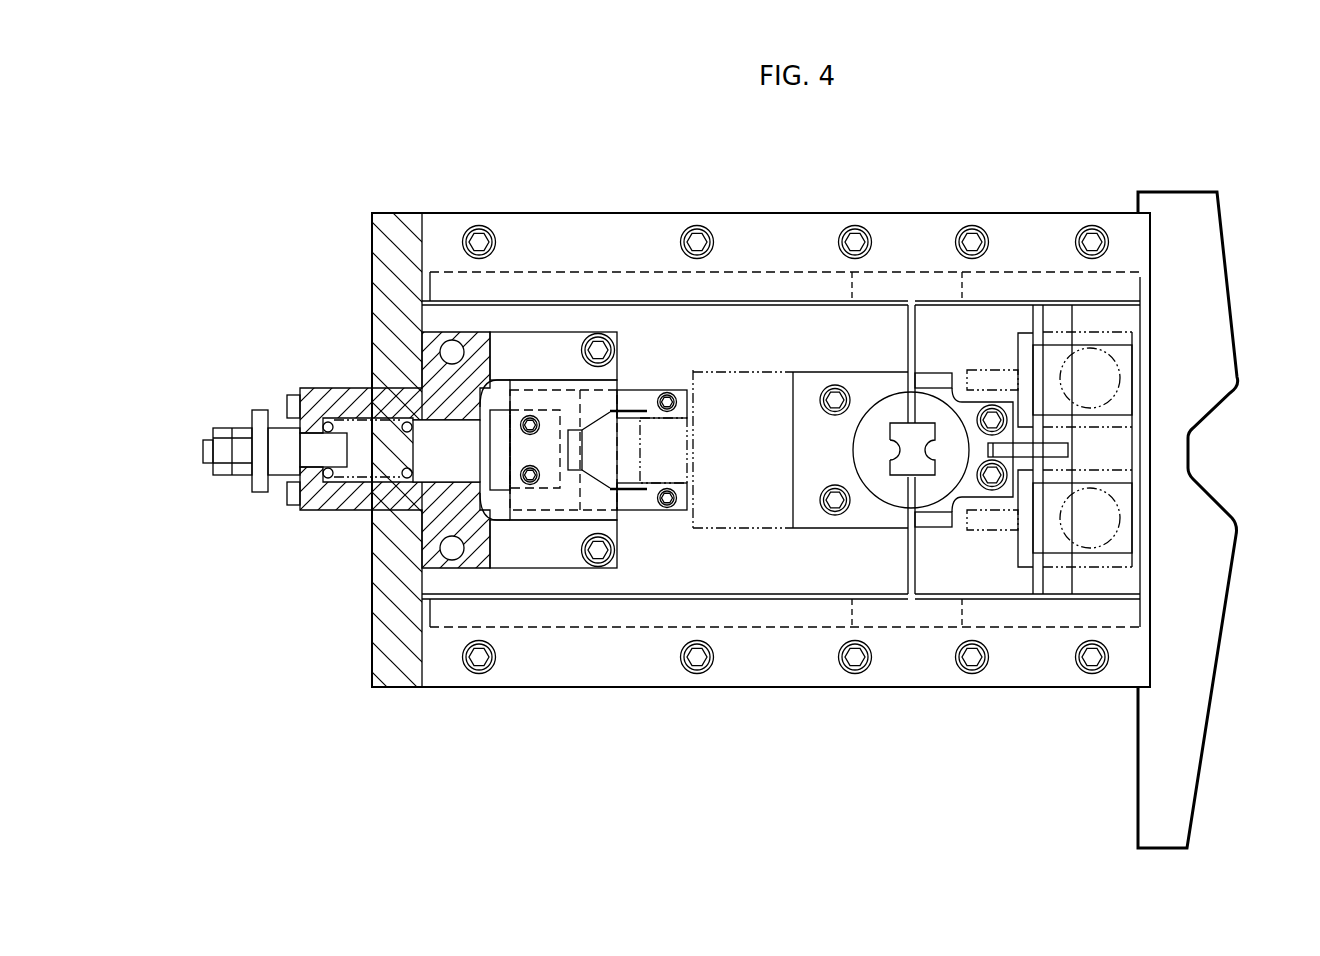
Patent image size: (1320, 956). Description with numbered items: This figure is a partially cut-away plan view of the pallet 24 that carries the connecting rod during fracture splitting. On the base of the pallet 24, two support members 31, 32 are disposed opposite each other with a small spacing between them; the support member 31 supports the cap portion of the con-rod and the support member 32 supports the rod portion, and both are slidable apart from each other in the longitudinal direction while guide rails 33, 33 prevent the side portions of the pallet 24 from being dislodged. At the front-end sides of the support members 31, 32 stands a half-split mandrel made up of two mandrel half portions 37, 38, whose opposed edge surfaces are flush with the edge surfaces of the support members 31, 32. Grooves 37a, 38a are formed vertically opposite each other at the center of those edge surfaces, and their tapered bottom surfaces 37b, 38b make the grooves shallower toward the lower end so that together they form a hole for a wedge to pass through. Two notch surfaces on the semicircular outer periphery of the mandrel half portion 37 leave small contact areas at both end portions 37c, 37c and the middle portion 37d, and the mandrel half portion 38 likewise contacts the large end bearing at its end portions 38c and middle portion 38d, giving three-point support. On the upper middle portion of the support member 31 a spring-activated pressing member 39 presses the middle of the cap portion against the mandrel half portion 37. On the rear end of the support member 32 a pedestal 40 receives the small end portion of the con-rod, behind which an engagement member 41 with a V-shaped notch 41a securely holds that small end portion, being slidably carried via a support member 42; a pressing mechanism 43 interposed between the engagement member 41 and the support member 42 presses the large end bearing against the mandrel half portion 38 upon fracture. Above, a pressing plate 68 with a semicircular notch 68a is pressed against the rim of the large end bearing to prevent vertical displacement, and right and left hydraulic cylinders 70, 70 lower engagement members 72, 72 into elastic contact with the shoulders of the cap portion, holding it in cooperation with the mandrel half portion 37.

The pallet 24 is at (404, 205).
The support member 31 is at (1010, 318).
The support member 32 is at (580, 322).
The guide rail 33 is at (523, 235).
The mandrel half portion 37 is at (948, 500).
The groove 37a is at (935, 440).
The bottom surface 37b is at (955, 403).
The end portion 37c is at (922, 430).
The middle portion 37d is at (940, 503).
The mandrel half portion 38 is at (875, 497).
The groove 38a is at (900, 423).
The bottom surface 38b is at (890, 440).
The end portion 38c is at (905, 430).
The middle portion 38d is at (862, 483).
The pressing member 39 is at (1050, 450).
The pedestal 40 is at (634, 458).
The engagement member 41 is at (552, 497).
The notch 41a is at (625, 486).
The support member 42 is at (517, 548).
The pressing mechanism 43 is at (359, 463).
The pressing plate 68 is at (743, 367).
The semicircular notch 68a is at (843, 365).
The hydraulic cylinder 70 is at (1118, 372).
The engagement member 72 is at (1132, 338).